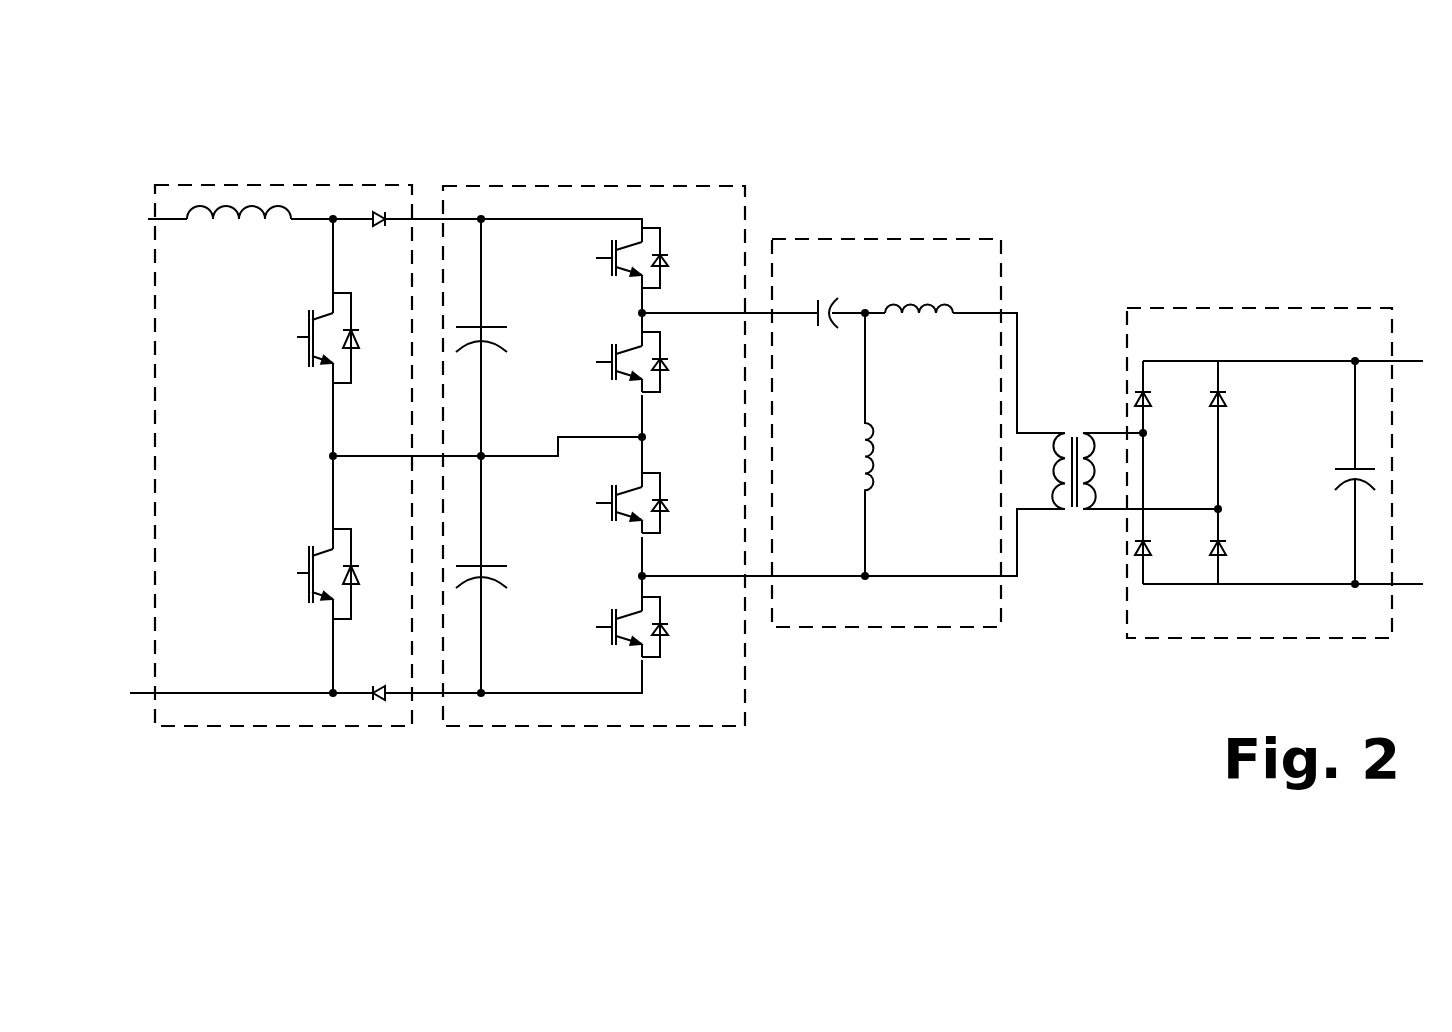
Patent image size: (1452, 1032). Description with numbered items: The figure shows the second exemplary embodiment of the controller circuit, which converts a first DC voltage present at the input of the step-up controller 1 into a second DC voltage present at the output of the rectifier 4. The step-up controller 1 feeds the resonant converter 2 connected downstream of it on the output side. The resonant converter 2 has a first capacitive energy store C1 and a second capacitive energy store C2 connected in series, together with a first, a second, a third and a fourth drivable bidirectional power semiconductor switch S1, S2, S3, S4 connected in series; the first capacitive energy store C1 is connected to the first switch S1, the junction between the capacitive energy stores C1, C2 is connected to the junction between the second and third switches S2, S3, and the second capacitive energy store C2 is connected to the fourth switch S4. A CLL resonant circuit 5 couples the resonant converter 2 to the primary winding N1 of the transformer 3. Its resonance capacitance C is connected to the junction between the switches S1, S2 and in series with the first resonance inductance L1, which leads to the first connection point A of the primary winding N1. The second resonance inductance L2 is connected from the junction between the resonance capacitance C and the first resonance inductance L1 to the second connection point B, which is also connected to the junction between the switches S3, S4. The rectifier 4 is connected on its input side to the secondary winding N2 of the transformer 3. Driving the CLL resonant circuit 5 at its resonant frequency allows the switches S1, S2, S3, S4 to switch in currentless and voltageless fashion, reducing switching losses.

The step-up controller 1 is at (242, 185).
The resonant converter 2 is at (560, 186).
The transformer 3 is at (1066, 386).
The rectifier 4 is at (1252, 308).
The CLL resonant circuit 5 is at (885, 239).
The first drivable bidirectional power semiconductor switch S1 is at (658, 258).
The second drivable bidirectional power semiconductor switch S2 is at (658, 362).
The third drivable bidirectional power semiconductor switch S3 is at (658, 503).
The fourth drivable bidirectional power semiconductor switch S4 is at (658, 627).
The first capacitive energy store C1 is at (493, 337).
The second capacitive energy store C2 is at (493, 574).
The resonance capacitance C is at (827, 292).
The first resonance inductance L1 is at (919, 285).
The second resonance inductance L2 is at (895, 444).
The primary winding N1 is at (1052, 494).
The secondary winding N2 is at (1095, 451).